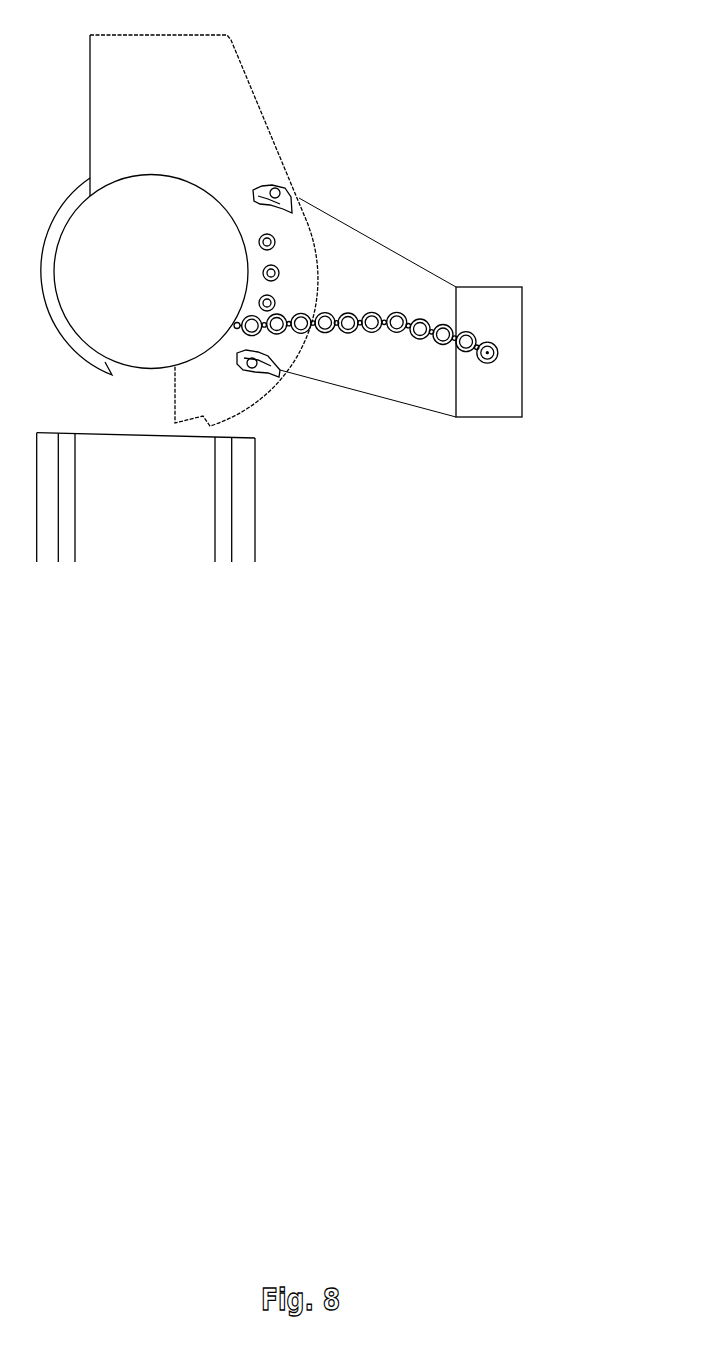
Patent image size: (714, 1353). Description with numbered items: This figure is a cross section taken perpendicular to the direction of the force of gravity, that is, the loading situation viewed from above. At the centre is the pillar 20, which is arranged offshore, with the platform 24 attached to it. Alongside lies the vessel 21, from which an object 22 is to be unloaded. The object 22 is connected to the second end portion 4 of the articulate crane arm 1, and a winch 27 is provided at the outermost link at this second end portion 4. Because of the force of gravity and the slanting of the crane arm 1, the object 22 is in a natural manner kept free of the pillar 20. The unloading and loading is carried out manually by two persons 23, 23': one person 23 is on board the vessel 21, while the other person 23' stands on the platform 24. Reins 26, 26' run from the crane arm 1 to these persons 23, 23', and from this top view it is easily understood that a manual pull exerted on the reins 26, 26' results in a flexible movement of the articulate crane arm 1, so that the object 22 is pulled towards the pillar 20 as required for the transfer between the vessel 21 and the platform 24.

The crane arm 1 is at (410, 315).
The second crane end portion 4 is at (500, 342).
The pillar 20 is at (177, 263).
The vessel 21 is at (239, 512).
The object 22 is at (495, 298).
The person 23 is at (313, 401).
The person 23' is at (323, 172).
The platform 24 is at (212, 87).
The rein 26 is at (387, 421).
The rein 26' is at (391, 236).
The winch 27 is at (493, 359).